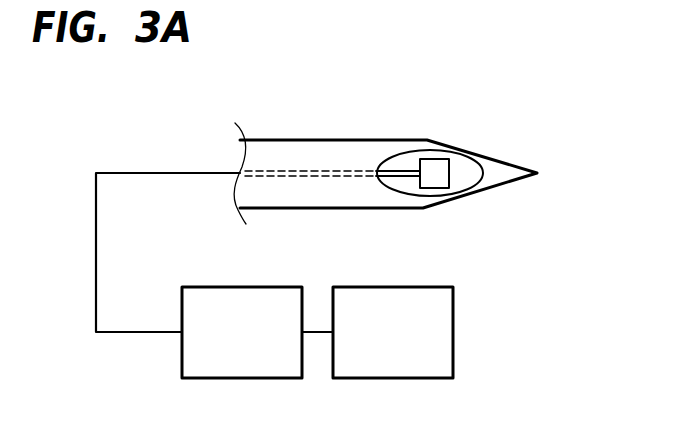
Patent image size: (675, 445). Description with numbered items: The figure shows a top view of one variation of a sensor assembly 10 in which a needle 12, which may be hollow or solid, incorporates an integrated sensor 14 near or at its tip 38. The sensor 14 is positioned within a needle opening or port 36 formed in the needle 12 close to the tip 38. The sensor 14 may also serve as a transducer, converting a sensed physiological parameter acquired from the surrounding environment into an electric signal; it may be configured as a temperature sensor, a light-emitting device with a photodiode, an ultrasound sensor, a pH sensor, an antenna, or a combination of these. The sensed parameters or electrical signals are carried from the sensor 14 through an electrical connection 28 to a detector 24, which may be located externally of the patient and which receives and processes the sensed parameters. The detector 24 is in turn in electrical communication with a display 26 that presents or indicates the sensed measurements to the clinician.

The sensor assembly 10 is at (383, 82).
The needle 12 is at (343, 139).
The sensor 14 is at (450, 175).
The detector 24 is at (228, 286).
The display 26 is at (378, 286).
The electrical connection 28 is at (182, 172).
The needle opening or port 36 is at (430, 150).
The tip 38 is at (525, 153).